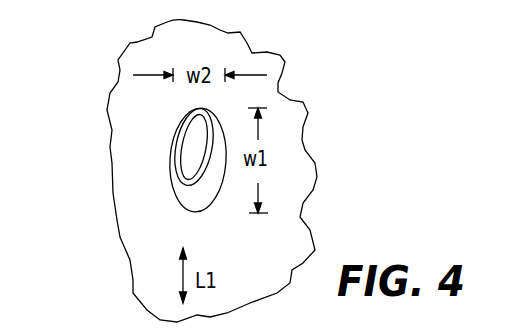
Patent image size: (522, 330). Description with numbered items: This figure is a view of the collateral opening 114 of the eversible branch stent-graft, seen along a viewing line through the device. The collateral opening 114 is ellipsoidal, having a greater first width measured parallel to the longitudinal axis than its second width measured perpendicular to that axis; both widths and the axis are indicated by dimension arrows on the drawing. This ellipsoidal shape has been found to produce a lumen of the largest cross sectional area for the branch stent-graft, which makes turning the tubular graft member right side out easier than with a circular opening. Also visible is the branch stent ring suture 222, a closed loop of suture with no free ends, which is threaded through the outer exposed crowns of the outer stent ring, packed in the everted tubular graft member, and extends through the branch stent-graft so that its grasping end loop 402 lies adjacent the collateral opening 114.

The collateral opening 114 is at (193, 213).
The branch stent ring suture 222 is at (192, 123).
The grasping end loop 402 is at (185, 186).